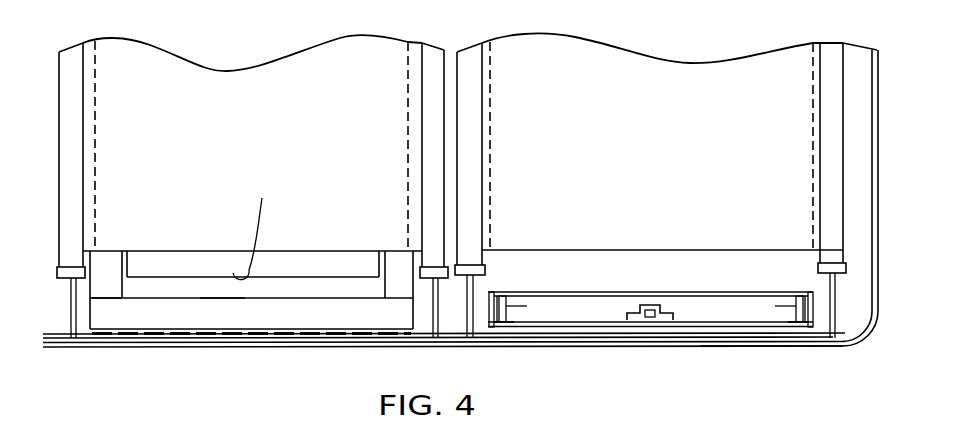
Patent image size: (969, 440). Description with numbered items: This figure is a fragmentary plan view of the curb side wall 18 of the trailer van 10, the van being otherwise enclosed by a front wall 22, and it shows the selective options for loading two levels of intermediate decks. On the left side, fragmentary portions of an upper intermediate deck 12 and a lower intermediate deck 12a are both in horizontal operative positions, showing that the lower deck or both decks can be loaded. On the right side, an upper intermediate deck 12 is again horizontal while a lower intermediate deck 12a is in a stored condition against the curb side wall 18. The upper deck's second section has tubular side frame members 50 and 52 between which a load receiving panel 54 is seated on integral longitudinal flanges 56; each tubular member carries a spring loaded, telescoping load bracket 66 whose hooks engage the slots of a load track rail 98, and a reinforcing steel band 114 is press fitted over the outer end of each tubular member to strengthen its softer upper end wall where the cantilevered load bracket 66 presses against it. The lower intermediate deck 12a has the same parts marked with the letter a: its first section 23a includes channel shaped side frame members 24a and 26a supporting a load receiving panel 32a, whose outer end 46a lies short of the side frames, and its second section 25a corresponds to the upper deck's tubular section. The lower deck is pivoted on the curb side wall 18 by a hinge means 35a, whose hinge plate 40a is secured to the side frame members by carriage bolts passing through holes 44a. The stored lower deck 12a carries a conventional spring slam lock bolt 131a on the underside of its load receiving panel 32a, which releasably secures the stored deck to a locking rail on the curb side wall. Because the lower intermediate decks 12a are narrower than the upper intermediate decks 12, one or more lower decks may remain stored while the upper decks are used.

The trailer van 10 is at (211, 348).
The intermediate deck 12 is at (169, 42).
The lower intermediate deck 12a is at (184, 273).
The curb side wall 18 is at (717, 346).
The front wall 22 is at (870, 62).
The first section of lower intermediate deck 23a is at (742, 318).
The side frame member 24a is at (397, 262).
The second section of lower intermediate deck 25a is at (652, 289).
The side frame member 26a is at (107, 286).
The load receiving panel 32a is at (282, 263).
The hinge means 35a is at (222, 297).
The hinge plate 40a is at (282, 317).
The holes 44a is at (105, 315).
The outer end of load receiving panel 46a is at (254, 228).
The side frame member 50 is at (70, 90).
The side frame member 52 is at (437, 113).
The load receiving panel 54 is at (270, 88).
The flanges 56 is at (93, 140).
The telescoping load bracket 66 is at (69, 307).
The load track rail 98 is at (826, 327).
The reinforcing steel band 114 is at (67, 270).
The spring slam lock bolt 131a is at (664, 302).